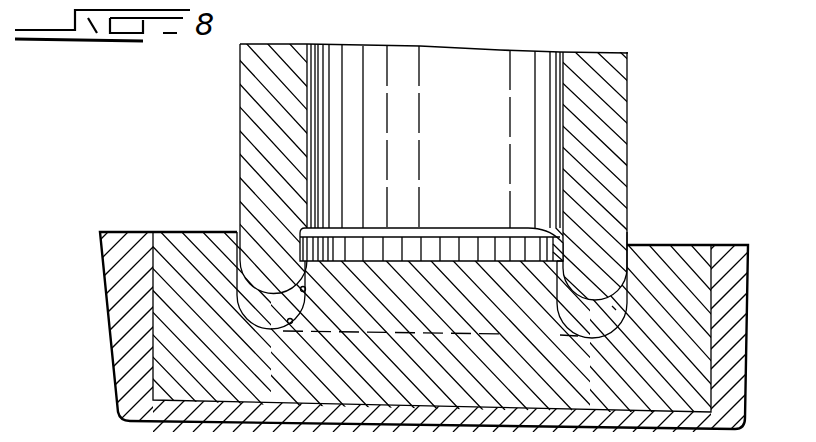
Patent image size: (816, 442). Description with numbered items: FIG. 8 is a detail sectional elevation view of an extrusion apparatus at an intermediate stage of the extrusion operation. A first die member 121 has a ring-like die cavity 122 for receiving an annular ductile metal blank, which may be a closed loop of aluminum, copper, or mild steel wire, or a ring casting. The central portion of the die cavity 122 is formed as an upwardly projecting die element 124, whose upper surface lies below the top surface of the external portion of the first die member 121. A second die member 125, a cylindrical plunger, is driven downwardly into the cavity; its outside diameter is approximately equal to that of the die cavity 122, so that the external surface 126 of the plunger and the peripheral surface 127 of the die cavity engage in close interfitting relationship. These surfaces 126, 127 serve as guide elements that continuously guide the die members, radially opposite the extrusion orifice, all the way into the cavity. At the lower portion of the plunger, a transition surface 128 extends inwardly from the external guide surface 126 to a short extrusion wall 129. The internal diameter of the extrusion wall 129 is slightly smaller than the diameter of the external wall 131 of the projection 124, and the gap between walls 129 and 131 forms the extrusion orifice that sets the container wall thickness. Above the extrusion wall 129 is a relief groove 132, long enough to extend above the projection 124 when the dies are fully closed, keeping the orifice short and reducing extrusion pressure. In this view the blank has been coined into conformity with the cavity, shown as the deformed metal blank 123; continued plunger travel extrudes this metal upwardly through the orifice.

The first die member 121 is at (665, 262).
The ring-like die cavity 122 is at (292, 324).
The deformed metal blank 123 is at (270, 320).
The upwardly projecting die element 124 is at (443, 268).
The second die member 125 is at (482, 119).
The external surface of the plunger 126 is at (629, 133).
The peripheral surface of the die cavity 127 is at (628, 238).
The transition surface 128 is at (613, 308).
The extrusion wall 129 is at (558, 265).
The external wall of the projection 131 is at (306, 291).
The relief groove 132 is at (534, 229).